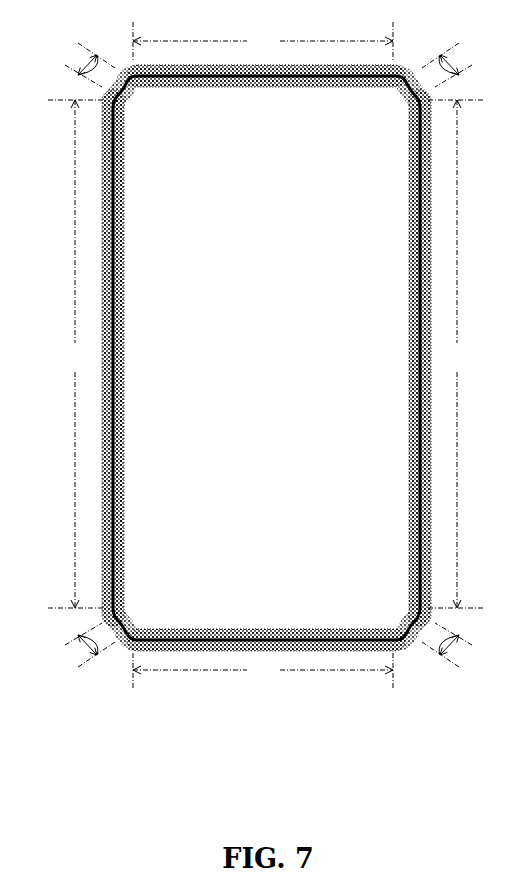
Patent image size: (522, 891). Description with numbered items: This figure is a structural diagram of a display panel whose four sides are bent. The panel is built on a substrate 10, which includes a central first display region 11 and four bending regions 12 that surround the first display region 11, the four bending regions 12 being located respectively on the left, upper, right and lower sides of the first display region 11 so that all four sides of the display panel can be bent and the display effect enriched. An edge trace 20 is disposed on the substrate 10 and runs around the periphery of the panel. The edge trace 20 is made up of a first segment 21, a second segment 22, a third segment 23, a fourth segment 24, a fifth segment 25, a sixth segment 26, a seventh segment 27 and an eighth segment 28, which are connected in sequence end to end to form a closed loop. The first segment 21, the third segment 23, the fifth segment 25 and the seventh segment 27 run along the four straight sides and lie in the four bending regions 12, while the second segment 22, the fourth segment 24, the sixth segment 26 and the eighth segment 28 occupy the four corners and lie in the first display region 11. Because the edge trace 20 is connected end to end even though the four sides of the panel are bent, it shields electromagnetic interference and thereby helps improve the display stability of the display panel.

The substrate 10 is at (266, 420).
The first display region 11 is at (167, 621).
The bending region 12 is at (232, 655).
The edge trace 20 is at (322, 640).
The first segment 21 is at (76, 354).
The second segment 22 is at (83, 60).
The third segment 23 is at (263, 42).
The fourth segment 24 is at (454, 60).
The fifth segment 25 is at (456, 354).
The sixth segment 26 is at (454, 650).
The seventh segment 27 is at (263, 671).
The eighth segment 28 is at (83, 650).